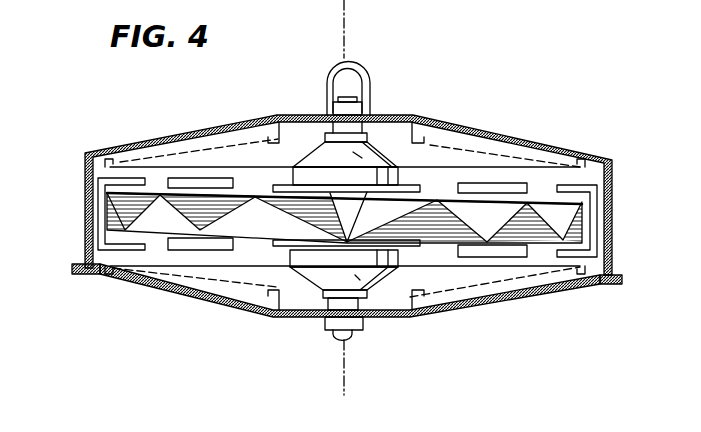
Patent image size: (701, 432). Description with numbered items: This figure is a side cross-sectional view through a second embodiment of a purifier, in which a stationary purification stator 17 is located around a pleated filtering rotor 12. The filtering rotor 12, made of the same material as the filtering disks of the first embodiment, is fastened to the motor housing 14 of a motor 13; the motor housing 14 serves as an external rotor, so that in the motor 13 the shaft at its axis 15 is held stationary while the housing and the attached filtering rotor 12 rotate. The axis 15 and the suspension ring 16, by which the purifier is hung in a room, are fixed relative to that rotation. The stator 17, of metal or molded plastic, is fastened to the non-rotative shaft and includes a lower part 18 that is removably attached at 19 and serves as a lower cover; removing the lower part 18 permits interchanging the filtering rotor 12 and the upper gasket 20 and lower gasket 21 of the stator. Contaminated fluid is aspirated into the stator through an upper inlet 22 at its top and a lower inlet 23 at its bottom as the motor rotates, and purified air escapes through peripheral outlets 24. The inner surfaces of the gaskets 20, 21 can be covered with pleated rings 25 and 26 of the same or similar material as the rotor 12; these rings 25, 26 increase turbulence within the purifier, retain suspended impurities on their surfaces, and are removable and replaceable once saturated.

The filtering rotor 12 is at (542, 208).
The motor 13 is at (376, 143).
The motor housing 14 is at (412, 178).
The axis 15 is at (345, 37).
The suspension ring 16 is at (357, 67).
The stator 17 is at (228, 88).
The lower part 18 is at (530, 302).
The attachment point 19 is at (72, 270).
The upper gasket 20 is at (331, 190).
The lower gasket 21 is at (472, 306).
The upper inlet 22 is at (298, 114).
The lower inlet 23 is at (390, 317).
The peripheral outlets 24 is at (90, 208).
The pleated ring 25 is at (470, 128).
The pleated ring 26 is at (508, 288).